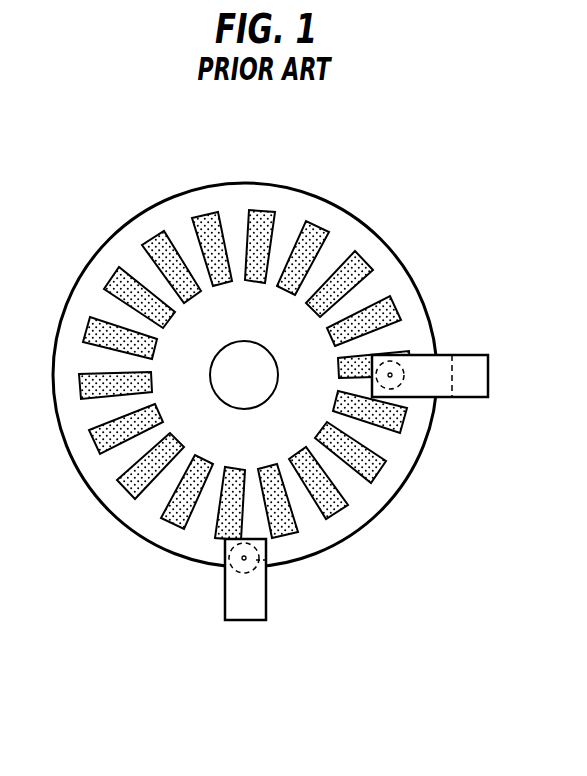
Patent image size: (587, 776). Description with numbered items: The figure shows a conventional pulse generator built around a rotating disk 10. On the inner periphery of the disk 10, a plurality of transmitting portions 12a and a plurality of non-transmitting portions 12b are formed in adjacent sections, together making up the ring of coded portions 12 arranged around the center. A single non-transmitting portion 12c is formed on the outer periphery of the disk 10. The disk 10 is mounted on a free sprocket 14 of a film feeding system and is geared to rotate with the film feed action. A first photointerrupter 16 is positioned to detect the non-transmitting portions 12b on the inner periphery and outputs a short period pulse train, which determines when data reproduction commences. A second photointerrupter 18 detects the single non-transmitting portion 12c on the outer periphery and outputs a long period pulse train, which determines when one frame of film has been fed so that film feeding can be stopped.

The disk 10 is at (388, 247).
The slots 12 is at (245, 380).
The transmitting portion 12a is at (230, 225).
The non-transmitting portion 12b is at (203, 232).
The single non-transmitting portion 12c is at (120, 497).
The free sprocket 14 is at (233, 381).
The first photointerrupter 16 is at (408, 368).
The second photointerrupter 18 is at (268, 562).